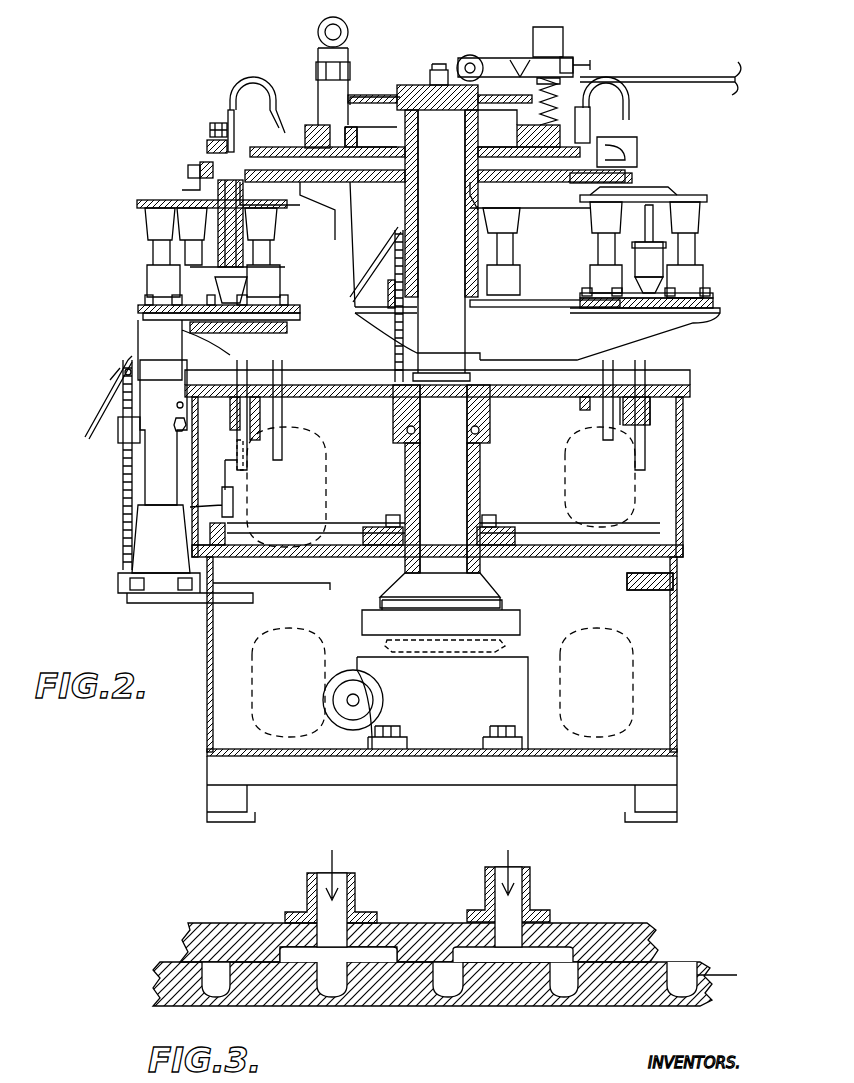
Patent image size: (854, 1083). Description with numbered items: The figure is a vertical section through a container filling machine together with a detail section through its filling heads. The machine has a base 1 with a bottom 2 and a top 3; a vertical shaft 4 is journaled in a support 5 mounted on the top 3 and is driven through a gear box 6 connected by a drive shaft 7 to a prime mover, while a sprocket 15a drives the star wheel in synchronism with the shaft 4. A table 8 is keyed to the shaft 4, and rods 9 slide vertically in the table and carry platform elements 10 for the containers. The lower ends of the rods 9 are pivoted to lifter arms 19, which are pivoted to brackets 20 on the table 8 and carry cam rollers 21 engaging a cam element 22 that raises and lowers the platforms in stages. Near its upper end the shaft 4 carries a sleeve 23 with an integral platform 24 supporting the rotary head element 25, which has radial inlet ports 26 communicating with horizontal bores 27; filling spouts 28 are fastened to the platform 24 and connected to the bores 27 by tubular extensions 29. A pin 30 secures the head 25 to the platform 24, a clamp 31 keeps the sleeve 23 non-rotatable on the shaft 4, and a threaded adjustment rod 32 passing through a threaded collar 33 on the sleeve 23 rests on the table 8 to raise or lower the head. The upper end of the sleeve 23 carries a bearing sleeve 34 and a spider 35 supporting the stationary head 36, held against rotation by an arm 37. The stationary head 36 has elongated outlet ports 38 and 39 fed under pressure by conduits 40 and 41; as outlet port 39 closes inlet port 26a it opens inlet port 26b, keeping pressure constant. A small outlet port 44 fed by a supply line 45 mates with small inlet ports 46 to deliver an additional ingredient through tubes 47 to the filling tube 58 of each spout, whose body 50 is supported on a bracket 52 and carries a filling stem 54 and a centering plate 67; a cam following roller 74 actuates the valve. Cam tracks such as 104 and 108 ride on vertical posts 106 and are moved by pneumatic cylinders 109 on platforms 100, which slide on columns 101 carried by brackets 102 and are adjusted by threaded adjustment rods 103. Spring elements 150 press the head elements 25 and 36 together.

In FIG. 2, the base 1 is at (676, 663).
In FIG. 2, the bottom 2 is at (677, 757).
In FIG. 2, the top 3 is at (590, 557).
In FIG. 2, the vertical shaft 4 is at (450, 471).
In FIG. 2, the support 5 is at (482, 490).
In FIG. 2, the gear box 6 is at (536, 657).
In FIG. 2, the drive shaft 7 is at (359, 700).
In FIG. 2, the table 8 is at (515, 397).
In FIG. 2, the rods 9 is at (250, 470).
In FIG. 2, the platform elements 10 is at (287, 330).
In FIG. 2, the sprocket 15a is at (362, 645).
In FIG. 2, the lifter arms 19 is at (225, 515).
In FIG. 2, the brackets 20 is at (228, 457).
In FIG. 2, the cam rollers 21 is at (222, 505).
In FIG. 2, the cam element 22 is at (170, 565).
In FIG. 2, the sleeve 23 is at (425, 210).
In FIG. 2, the platform 24 is at (407, 195).
In FIG. 2, the rotary head element 25 is at (405, 190).
In FIG. 3, the rotary head element 25 is at (652, 1006).
In FIG. 2, the inlet ports 26 is at (318, 130).
In FIG. 3, the inlet ports 26 is at (185, 945).
In FIG. 3, the inlet port 26a is at (575, 945).
In FIG. 3, the inlet port 26b is at (445, 945).
In FIG. 2, the horizontal bores 27 is at (378, 135).
In FIG. 3, the horizontal bores 27 is at (222, 1006).
In FIG. 2, the filling spouts 28 is at (208, 128).
In FIG. 2, the tubular extensions 29 is at (270, 128).
In FIG. 2, the pin 30 is at (520, 186).
In FIG. 2, the clamp 31 is at (465, 258).
In FIG. 2, the threaded adjustment rod 32 is at (395, 340).
In FIG. 2, the threaded collar 33 is at (403, 300).
In FIG. 2, the bearing sleeve 34 is at (418, 150).
In FIG. 2, the spider 35 is at (370, 97).
In FIG. 2, the stationary head 36 is at (312, 125).
In FIG. 3, the stationary head 36 is at (655, 923).
In FIG. 2, the arm 37 is at (490, 57).
In FIG. 3, the outlet port 38 is at (298, 962).
In FIG. 3, the outlet port 39 is at (510, 962).
In FIG. 3, the conduit 40 is at (532, 885).
In FIG. 2, the conduit 41 is at (350, 46).
In FIG. 3, the conduit 41 is at (368, 895).
In FIG. 2, the outlet port 44 is at (520, 135).
In FIG. 2, the supply line 45 is at (650, 77).
In FIG. 2, the inlet ports 46 is at (517, 137).
In FIG. 2, the tubes 47 is at (262, 90).
In FIG. 2, the body 50 is at (200, 155).
In FIG. 2, the bracket 52 is at (632, 160).
In FIG. 2, the filling stem 54 is at (247, 228).
In FIG. 2, the filling tube 58 is at (207, 146).
In FIG. 2, the plate 67 is at (190, 272).
In FIG. 2, the cam following roller 74 is at (188, 172).
In FIG. 2, the platforms 100 is at (138, 326).
In FIG. 2, the columns 101 is at (147, 462).
In FIG. 2, the brackets 102 is at (170, 604).
In FIG. 2, the threaded adjustment rods 103 is at (123, 494).
In FIG. 2, the cam track 104 is at (182, 188).
In FIG. 2, the vertical posts 106 is at (152, 253).
In FIG. 2, the cam track 108 is at (680, 195).
In FIG. 2, the pneumatic cylinders 109 is at (655, 260).
In FIG. 2, the spring elements 150 is at (575, 73).